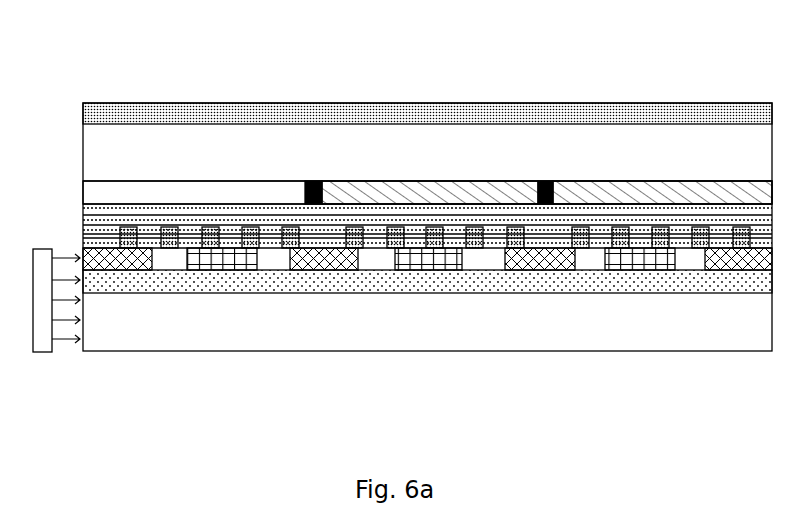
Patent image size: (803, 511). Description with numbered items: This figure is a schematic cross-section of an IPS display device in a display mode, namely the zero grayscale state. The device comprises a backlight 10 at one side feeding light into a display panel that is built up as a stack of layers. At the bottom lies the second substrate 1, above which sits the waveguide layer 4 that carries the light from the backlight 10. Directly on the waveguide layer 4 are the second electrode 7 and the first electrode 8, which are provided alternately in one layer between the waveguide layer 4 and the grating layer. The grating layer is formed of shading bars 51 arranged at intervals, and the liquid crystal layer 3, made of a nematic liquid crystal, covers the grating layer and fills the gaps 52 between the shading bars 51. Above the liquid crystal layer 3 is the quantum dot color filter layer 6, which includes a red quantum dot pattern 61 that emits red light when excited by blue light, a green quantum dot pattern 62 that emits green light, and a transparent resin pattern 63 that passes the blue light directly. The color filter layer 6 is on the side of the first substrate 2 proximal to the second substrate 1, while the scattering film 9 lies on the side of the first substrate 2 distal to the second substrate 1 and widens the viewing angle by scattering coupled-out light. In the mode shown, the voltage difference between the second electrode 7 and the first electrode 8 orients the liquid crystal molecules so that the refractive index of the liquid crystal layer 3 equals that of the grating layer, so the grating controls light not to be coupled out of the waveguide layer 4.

The second substrate 1 is at (707, 325).
The first substrate 2 is at (717, 118).
The liquid crystal layer 3 is at (623, 218).
The waveguide layer 4 is at (613, 278).
The quantum dot color filter layer 6 is at (620, 36).
The second electrode 7 is at (118, 255).
The first electrode 8 is at (222, 252).
The scattering film 9 is at (147, 110).
The backlight 10 is at (47, 255).
The shading bars 51 is at (433, 250).
The gaps 52 is at (493, 245).
The red quantum dot pattern 61 is at (568, 190).
The green quantum dot pattern 62 is at (455, 195).
The transparent resin pattern 63 is at (282, 197).